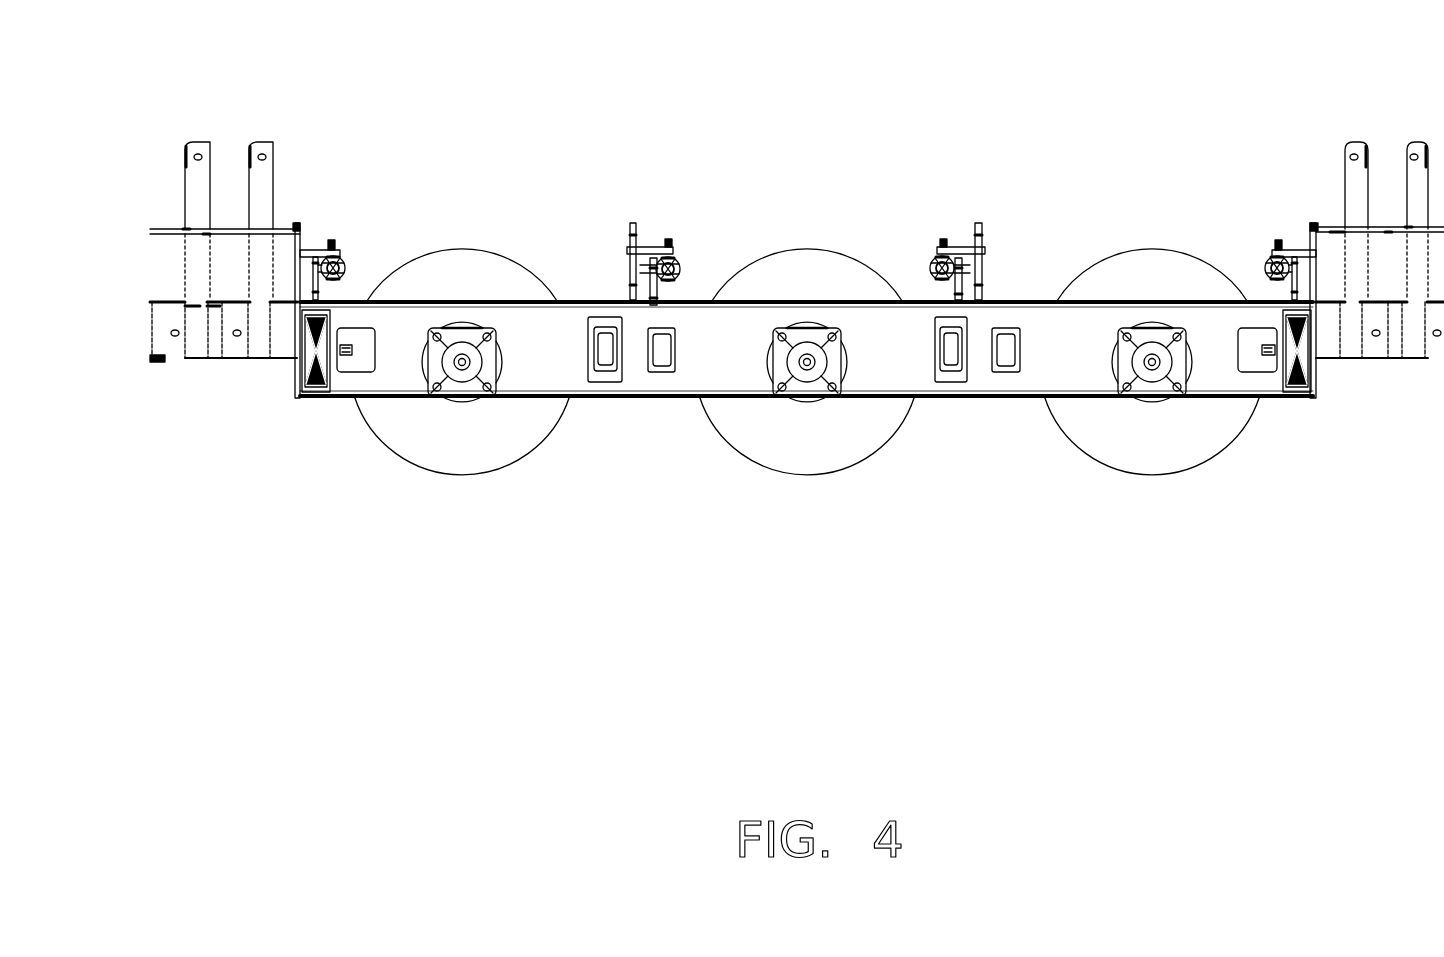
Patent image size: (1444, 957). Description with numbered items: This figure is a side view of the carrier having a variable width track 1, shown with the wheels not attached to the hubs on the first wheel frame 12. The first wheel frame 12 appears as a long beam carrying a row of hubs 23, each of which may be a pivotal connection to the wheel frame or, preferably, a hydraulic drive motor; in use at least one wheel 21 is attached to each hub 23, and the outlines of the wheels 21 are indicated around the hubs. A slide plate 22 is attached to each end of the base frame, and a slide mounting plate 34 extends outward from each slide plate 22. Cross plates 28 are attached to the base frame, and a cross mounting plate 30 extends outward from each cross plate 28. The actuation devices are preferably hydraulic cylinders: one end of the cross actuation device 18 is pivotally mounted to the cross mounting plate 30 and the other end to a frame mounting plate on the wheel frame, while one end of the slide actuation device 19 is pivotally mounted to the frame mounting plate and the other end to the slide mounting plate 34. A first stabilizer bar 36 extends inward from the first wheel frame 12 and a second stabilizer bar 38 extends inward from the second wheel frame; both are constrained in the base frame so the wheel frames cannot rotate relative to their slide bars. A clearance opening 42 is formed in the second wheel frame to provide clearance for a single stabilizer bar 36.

The carrier having a variable width track 1 is at (797, 316).
The first wheel frame 12 is at (723, 348).
The cross actuation device 18 is at (683, 268).
The slide actuation device 19 is at (347, 267).
The wheel 21 is at (1152, 247).
The slide plate 22 is at (298, 223).
The hub 23 is at (840, 380).
The cross plate 28 is at (982, 223).
The cross mounting plate 30 is at (648, 247).
The slide mounting plate 34 is at (312, 248).
The first stabilizer bar 36 is at (1007, 368).
The second stabilizer bar 38 is at (612, 312).
The clearance opening 42 is at (607, 383).